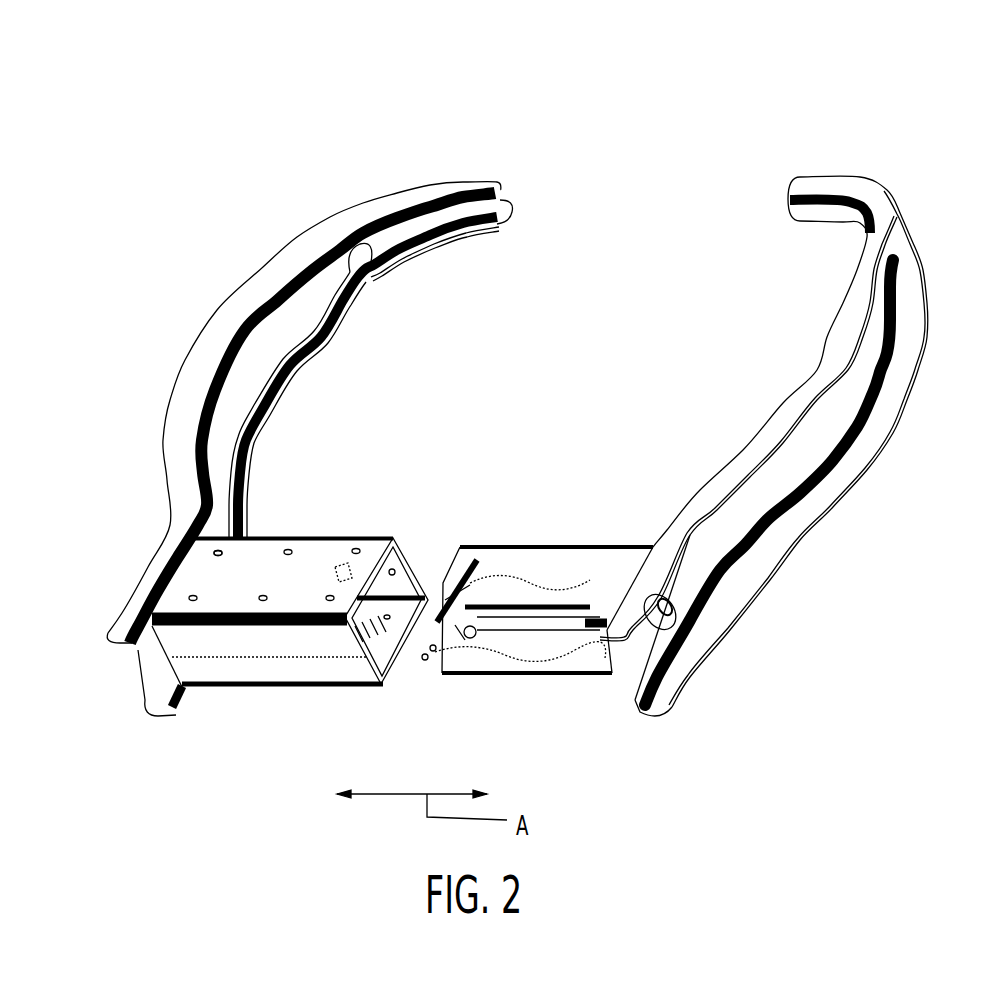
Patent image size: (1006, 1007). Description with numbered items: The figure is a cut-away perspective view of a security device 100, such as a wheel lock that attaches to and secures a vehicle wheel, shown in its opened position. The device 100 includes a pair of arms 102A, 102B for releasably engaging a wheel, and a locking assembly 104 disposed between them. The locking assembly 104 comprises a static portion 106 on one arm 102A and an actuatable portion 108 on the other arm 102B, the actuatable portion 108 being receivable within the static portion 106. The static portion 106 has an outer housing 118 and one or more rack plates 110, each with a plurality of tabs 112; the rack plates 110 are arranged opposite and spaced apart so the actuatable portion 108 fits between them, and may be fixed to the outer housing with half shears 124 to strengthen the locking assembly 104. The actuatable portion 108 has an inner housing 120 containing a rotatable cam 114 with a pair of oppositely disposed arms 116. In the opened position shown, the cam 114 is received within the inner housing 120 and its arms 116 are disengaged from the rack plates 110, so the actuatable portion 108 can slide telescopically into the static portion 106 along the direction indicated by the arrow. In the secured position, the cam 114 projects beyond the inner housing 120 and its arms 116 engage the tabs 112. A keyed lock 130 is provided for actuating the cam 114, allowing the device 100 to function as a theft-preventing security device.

The device 100 is at (200, 213).
The arm 102A is at (320, 182).
The arm 102B is at (882, 158).
The locking assembly 104 is at (270, 765).
The static portion 106 is at (353, 513).
The actuatable portion 108 is at (535, 505).
The rack plate 110 is at (395, 570).
The tab 112 is at (340, 572).
The rotatable cam 114 is at (527, 652).
The arm 116 is at (450, 565).
The housing 118 is at (237, 677).
The housing 120 is at (597, 548).
The half shear 124 is at (214, 554).
The keyed lock 130 is at (672, 615).